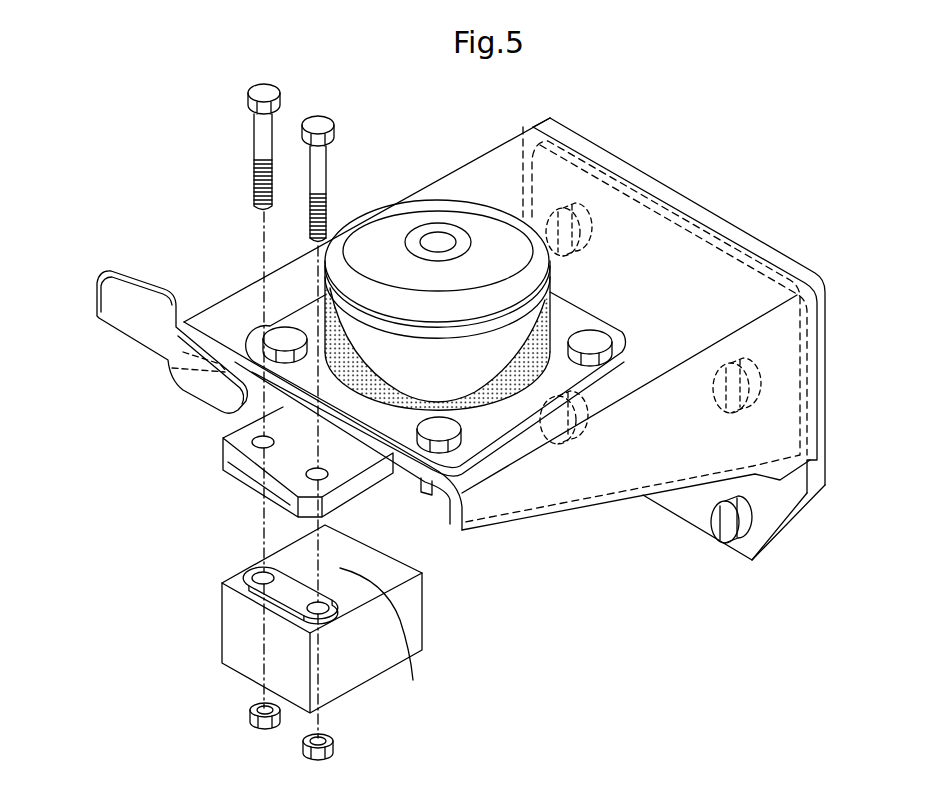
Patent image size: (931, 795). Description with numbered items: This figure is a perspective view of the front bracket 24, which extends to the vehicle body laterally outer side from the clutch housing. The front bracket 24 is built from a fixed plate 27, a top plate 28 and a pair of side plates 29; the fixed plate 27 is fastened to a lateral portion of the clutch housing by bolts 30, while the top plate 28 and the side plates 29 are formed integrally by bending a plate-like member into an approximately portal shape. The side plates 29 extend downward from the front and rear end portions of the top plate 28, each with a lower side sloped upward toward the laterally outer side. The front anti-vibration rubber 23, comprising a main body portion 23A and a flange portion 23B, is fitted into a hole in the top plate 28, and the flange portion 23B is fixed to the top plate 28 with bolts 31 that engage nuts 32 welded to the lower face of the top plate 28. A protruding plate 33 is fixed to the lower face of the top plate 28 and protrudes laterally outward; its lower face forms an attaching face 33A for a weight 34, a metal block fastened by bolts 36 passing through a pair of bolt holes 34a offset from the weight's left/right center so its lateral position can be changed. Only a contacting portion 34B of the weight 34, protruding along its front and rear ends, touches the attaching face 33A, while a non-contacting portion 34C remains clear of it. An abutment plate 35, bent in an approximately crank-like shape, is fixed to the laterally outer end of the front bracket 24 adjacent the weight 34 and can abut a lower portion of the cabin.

The front anti-vibration rubber 23 is at (373, 206).
The main body portion 23A is at (562, 300).
The flange portion 23B is at (595, 380).
The front bracket 24 is at (490, 528).
The fixed plate 27 is at (732, 529).
The top plate 28 is at (485, 178).
The side plates 29 is at (180, 380).
The bolts 30 is at (583, 220).
The bolts 31 is at (290, 336).
The nuts 32 is at (423, 495).
The protruding plate 33 is at (233, 446).
The attaching face 33A is at (240, 482).
The weight 34 is at (237, 673).
The bolt holes 34a is at (313, 608).
The contacting portion 34B is at (248, 583).
The non-contacting portion 34C is at (411, 646).
The abutment plate 35 is at (138, 285).
The bolts 36 is at (305, 125).